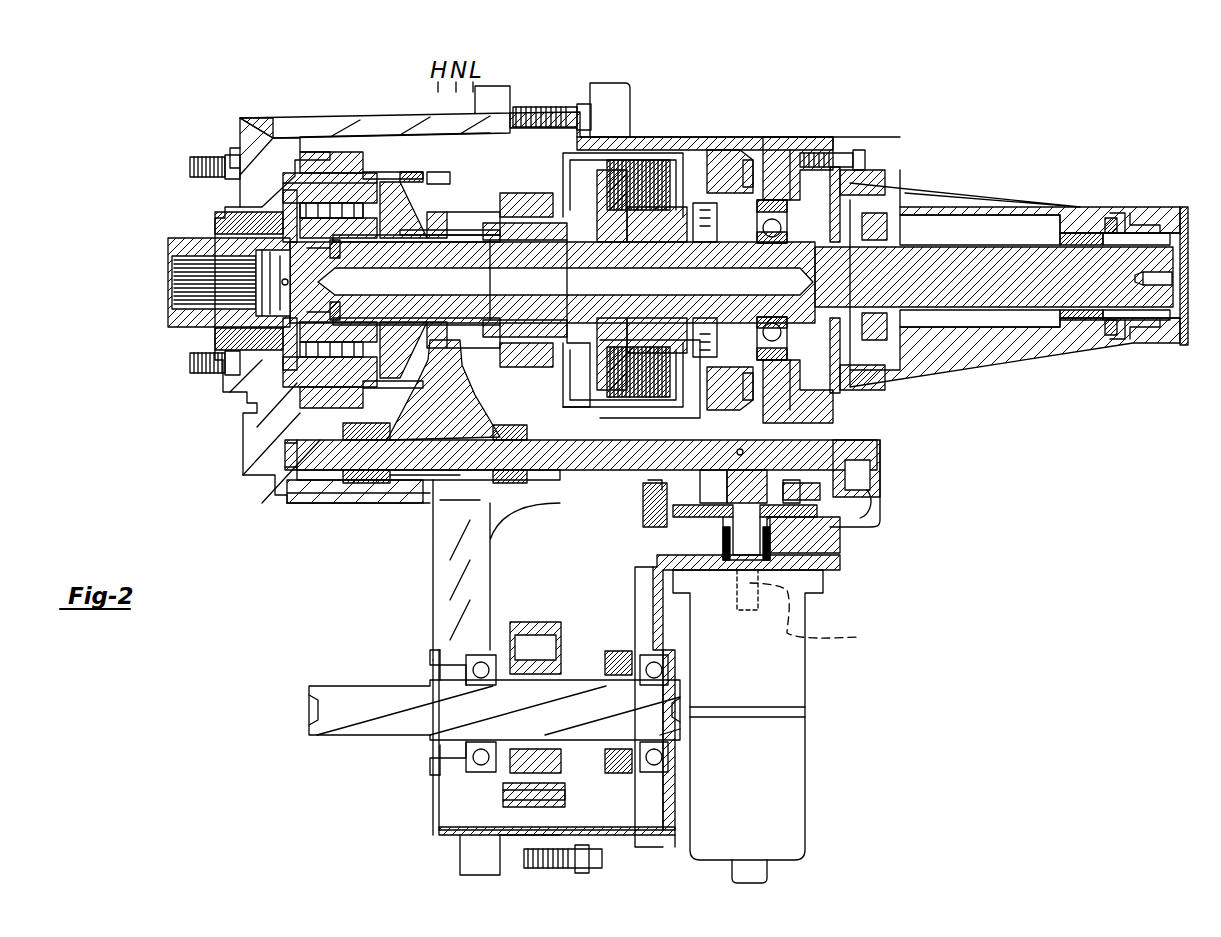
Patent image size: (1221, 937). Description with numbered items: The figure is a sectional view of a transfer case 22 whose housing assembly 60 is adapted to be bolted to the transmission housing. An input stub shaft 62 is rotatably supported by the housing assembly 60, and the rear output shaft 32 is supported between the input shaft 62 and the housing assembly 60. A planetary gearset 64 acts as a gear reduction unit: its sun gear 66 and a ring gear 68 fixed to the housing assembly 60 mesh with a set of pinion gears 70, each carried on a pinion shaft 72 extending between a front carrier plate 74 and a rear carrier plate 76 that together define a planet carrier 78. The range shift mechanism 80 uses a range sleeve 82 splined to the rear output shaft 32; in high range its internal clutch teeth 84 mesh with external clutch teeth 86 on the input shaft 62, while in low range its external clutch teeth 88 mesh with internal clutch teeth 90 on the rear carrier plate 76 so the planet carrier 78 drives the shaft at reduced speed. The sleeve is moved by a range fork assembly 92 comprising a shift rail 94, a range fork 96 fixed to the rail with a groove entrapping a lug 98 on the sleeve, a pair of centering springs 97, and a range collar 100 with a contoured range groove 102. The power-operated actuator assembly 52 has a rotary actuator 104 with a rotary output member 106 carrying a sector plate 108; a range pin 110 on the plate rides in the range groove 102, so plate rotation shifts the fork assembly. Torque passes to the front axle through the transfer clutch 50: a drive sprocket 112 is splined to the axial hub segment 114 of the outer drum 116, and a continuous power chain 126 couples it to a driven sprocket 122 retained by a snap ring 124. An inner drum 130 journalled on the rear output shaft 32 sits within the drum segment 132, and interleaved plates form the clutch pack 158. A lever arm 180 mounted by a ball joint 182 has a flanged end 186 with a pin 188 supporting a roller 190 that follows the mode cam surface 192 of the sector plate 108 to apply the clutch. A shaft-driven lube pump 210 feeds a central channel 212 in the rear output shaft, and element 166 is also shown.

The transfer case 22 is at (740, 120).
The rear output shaft 32 is at (1095, 275).
The transfer clutch 50 is at (636, 150).
The power-operated actuator assembly 52 is at (808, 747).
The housing assembly 60 is at (348, 120).
The input stub shaft 62 is at (185, 238).
The planetary gearset 64 is at (295, 158).
The sun gear 66 is at (333, 258).
The ring gear 68 is at (330, 152).
The pinion gears 70 is at (263, 417).
The pinion shaft 72 is at (245, 397).
The front carrier plate 74 is at (235, 160).
The rear carrier plate 76 is at (390, 182).
The planet carrier 78 is at (323, 477).
The range shift mechanism 80 is at (383, 482).
The range sleeve 82 is at (428, 247).
The internal clutch teeth 84 is at (390, 243).
The external clutch teeth 86 is at (283, 192).
The external clutch teeth 88 is at (378, 180).
The internal clutch teeth 90 is at (422, 190).
The range fork assembly 92 is at (510, 489).
The shift rail 94 is at (576, 470).
The range fork 96 is at (436, 477).
The centering springs 97 is at (328, 487).
The lug 98 is at (440, 222).
The range collar 100 is at (848, 497).
The range groove 102 is at (783, 487).
The rotary actuator 104 is at (788, 710).
The rotary output member 106 is at (845, 638).
The sector plate 108 is at (813, 517).
The range pin 110 is at (843, 492).
The drive sprocket 112 is at (525, 200).
The axial hub segment 114 is at (523, 252).
The outer drum 116 is at (628, 160).
The driven sprocket 122 is at (518, 627).
The snap ring 124 is at (478, 662).
The continuous power chain 126 is at (508, 797).
The inner drum 130 is at (632, 240).
The drum segment 132 is at (588, 400).
The clutch pack 158 is at (633, 377).
The plate 166 is at (845, 215).
The lever arm 180 is at (700, 165).
The ball joint 182 is at (760, 170).
The flanged end 186 is at (701, 492).
The pin 188 is at (648, 497).
The roller 190 is at (668, 547).
The mode cam surface 192 is at (758, 542).
The lube pump 210 is at (935, 212).
The central channel 212 is at (900, 215).